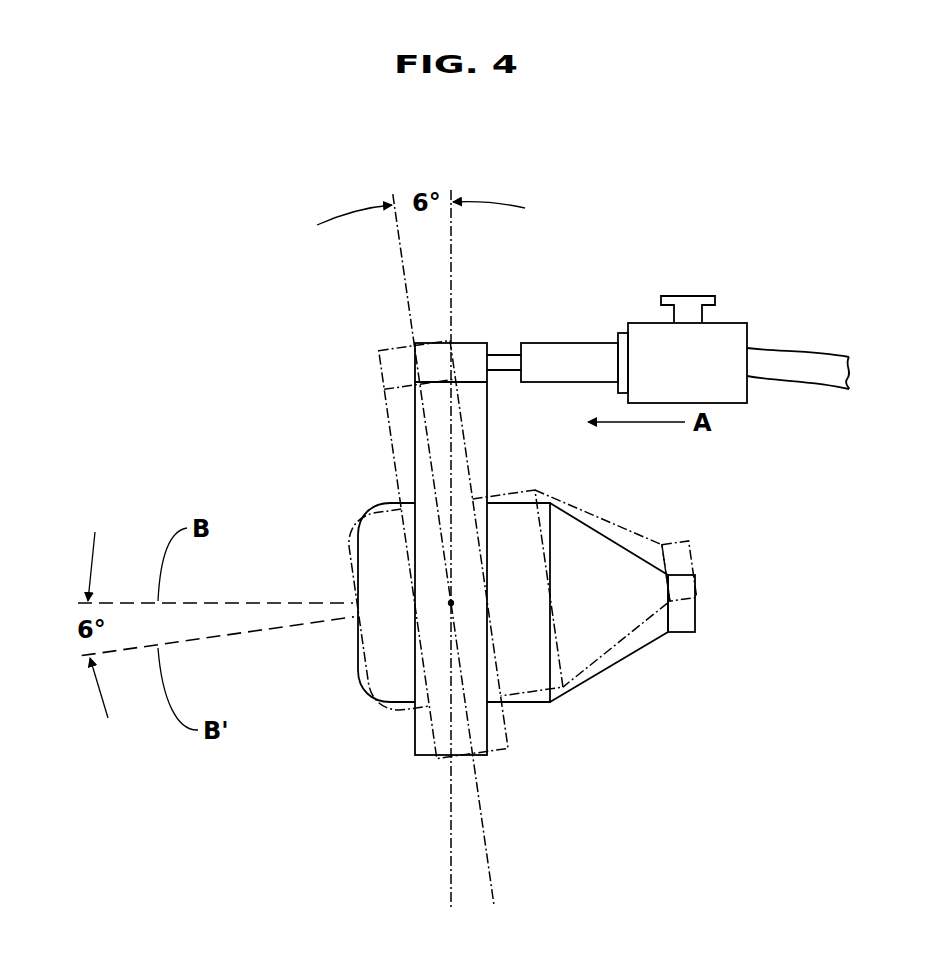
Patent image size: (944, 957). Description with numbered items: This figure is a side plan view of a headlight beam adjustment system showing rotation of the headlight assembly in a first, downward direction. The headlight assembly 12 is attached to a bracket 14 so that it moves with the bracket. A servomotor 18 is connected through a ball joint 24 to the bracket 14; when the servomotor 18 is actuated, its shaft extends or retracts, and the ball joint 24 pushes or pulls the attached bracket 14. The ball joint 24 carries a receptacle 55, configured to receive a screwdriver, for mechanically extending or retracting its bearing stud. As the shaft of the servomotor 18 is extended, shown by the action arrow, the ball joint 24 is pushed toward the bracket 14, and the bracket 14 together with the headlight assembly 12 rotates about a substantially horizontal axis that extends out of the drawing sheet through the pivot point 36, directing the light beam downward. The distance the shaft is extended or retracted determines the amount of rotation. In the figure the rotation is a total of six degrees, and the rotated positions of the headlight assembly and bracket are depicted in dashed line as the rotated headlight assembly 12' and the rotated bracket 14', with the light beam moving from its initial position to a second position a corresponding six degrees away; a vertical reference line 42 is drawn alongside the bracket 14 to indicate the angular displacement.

The vertical axis / centerline 42 is at (453, 239).
The bracket 14 is at (410, 586).
The rotated bracket 14' is at (494, 549).
The headlight assembly 12 is at (547, 617).
The rotated headlight assembly 12' is at (545, 590).
The pivot point 36 is at (451, 603).
The ball joint 24 is at (557, 343).
The servomotor 18 is at (737, 323).
The receptacle 55 is at (695, 296).